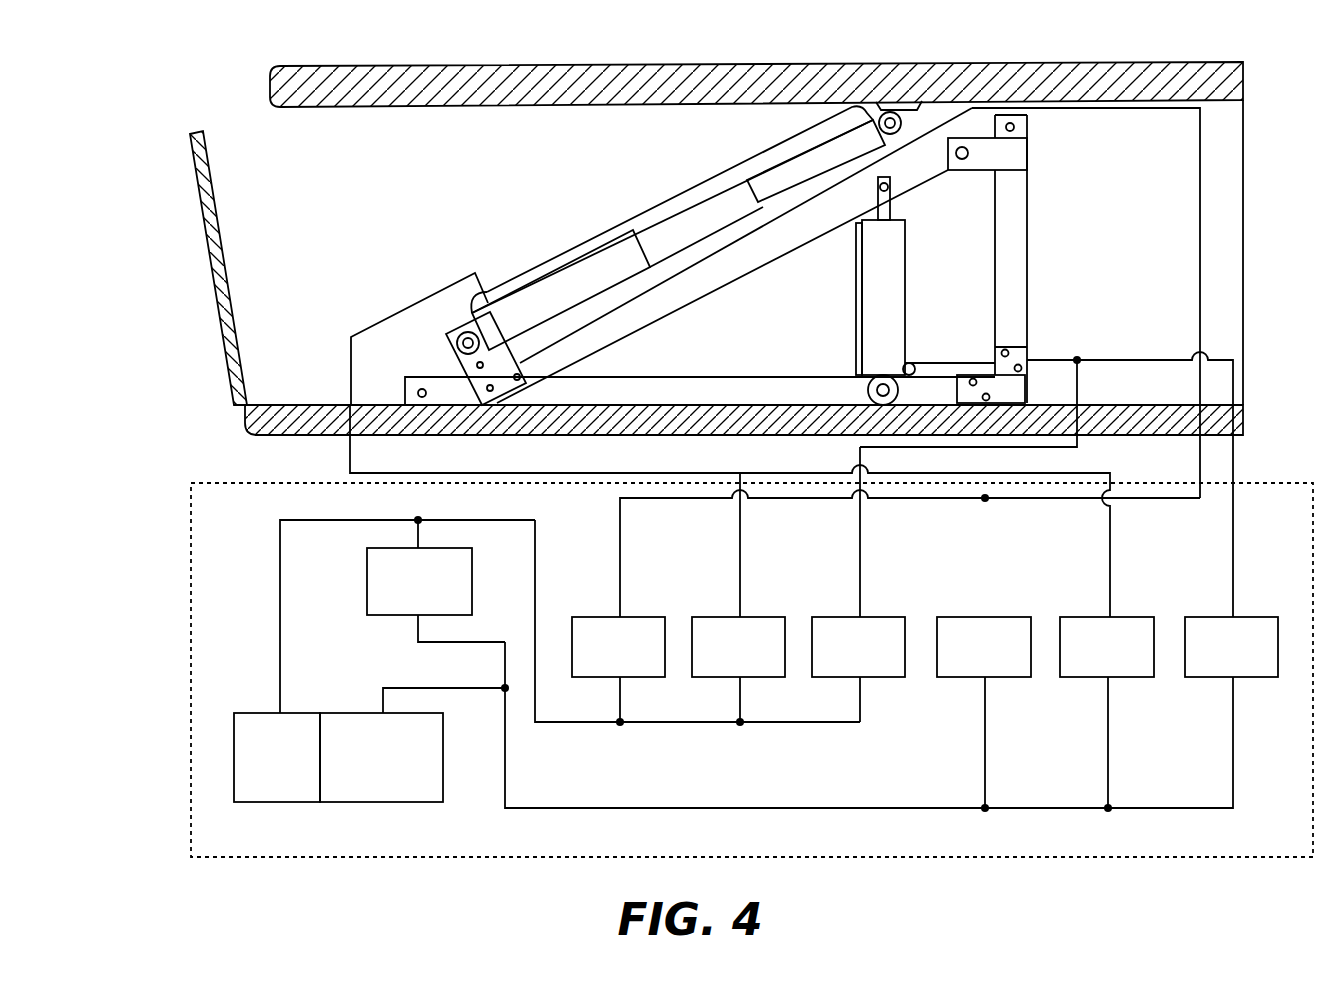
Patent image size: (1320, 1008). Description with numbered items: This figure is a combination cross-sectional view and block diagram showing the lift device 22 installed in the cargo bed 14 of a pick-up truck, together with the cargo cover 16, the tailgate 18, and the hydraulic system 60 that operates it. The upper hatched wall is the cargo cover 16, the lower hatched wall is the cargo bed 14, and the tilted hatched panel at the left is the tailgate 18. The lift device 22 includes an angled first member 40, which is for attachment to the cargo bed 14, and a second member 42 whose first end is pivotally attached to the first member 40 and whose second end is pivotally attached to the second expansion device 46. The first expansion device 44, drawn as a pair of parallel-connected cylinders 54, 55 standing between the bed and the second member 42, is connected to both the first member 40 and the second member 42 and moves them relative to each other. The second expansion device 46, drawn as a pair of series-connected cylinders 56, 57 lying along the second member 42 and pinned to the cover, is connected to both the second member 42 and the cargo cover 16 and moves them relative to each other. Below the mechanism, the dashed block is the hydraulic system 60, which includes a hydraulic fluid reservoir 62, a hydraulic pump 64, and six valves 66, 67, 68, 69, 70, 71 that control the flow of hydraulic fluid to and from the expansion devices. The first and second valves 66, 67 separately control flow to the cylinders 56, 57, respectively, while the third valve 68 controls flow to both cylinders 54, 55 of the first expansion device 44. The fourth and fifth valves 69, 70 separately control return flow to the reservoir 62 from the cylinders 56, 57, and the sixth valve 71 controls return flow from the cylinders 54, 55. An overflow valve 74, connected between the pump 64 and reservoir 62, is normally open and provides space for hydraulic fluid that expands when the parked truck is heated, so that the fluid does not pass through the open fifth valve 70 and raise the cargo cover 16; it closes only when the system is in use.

The cargo cover 16 is at (705, 66).
The tailgate 18 is at (207, 238).
The cargo bed 14 is at (330, 404).
The first lift device 22 is at (462, 209).
The second member 42 is at (688, 304).
The second expansion device 46 is at (686, 228).
The cylinder 57 is at (652, 268).
The cylinder 56 is at (772, 198).
The first expansion device 44 is at (884, 291).
The cylinder 55 is at (856, 262).
The cylinder 54 is at (857, 300).
The first member 40 is at (930, 375).
The hydraulic system 60 is at (747, 604).
The overflow valve 74 is at (474, 590).
The hydraulic pump 64 is at (276, 802).
The hydraulic fluid reservoir 62 is at (378, 802).
The first valve 66 is at (637, 617).
The second valve 67 is at (760, 617).
The third valve 68 is at (880, 617).
The fourth valve 69 is at (1006, 617).
The fifth valve 70 is at (1130, 617).
The sixth valve 71 is at (1254, 617).